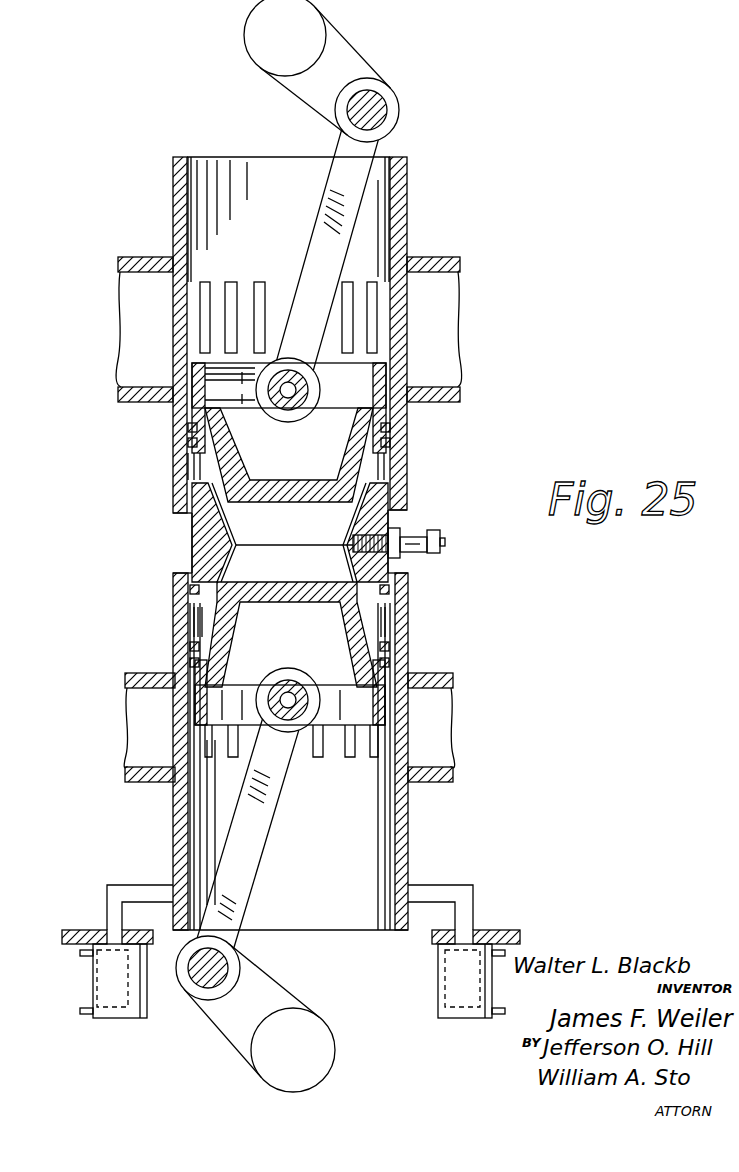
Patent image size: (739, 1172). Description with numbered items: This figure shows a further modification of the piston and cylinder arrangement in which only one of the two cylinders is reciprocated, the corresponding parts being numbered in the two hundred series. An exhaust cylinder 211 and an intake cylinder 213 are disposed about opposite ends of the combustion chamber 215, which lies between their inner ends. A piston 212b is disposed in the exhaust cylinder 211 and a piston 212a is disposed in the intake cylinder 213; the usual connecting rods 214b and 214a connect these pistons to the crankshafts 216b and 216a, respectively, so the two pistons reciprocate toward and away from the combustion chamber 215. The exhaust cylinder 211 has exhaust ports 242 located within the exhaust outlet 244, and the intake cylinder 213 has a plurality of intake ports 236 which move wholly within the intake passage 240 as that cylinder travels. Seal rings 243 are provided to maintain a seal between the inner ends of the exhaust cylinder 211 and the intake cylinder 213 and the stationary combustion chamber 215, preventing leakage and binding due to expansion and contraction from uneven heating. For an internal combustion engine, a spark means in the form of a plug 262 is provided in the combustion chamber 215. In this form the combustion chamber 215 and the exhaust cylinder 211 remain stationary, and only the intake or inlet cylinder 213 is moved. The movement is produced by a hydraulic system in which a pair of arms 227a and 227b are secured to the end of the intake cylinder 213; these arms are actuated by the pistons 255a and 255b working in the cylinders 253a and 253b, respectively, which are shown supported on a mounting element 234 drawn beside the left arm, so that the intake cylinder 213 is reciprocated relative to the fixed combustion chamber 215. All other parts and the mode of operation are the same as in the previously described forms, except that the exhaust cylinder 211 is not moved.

The exhaust cylinder 211 is at (405, 434).
The piston 212a is at (288, 593).
The piston 212b is at (298, 483).
The intake cylinder 213 is at (405, 617).
The connecting rod 214a is at (248, 850).
The connecting rod 214b is at (322, 222).
The combustion chamber 215 is at (383, 521).
The crankshaft 216a is at (320, 1058).
The crankshaft 216b is at (257, 35).
The arm 227a is at (133, 885).
The arm 227b is at (450, 885).
The mounting plate 234 is at (83, 930).
The intake ports 236 is at (373, 757).
The intake passage 240 is at (438, 716).
The exhaust ports 242 is at (373, 303).
The seal rings 243 is at (392, 590).
The exhaust outlet 244 is at (438, 345).
The cylinder 253a is at (107, 995).
The cylinder 253b is at (445, 987).
The piston 255a is at (93, 970).
The piston 255b is at (438, 962).
The spark plug 262 is at (395, 531).